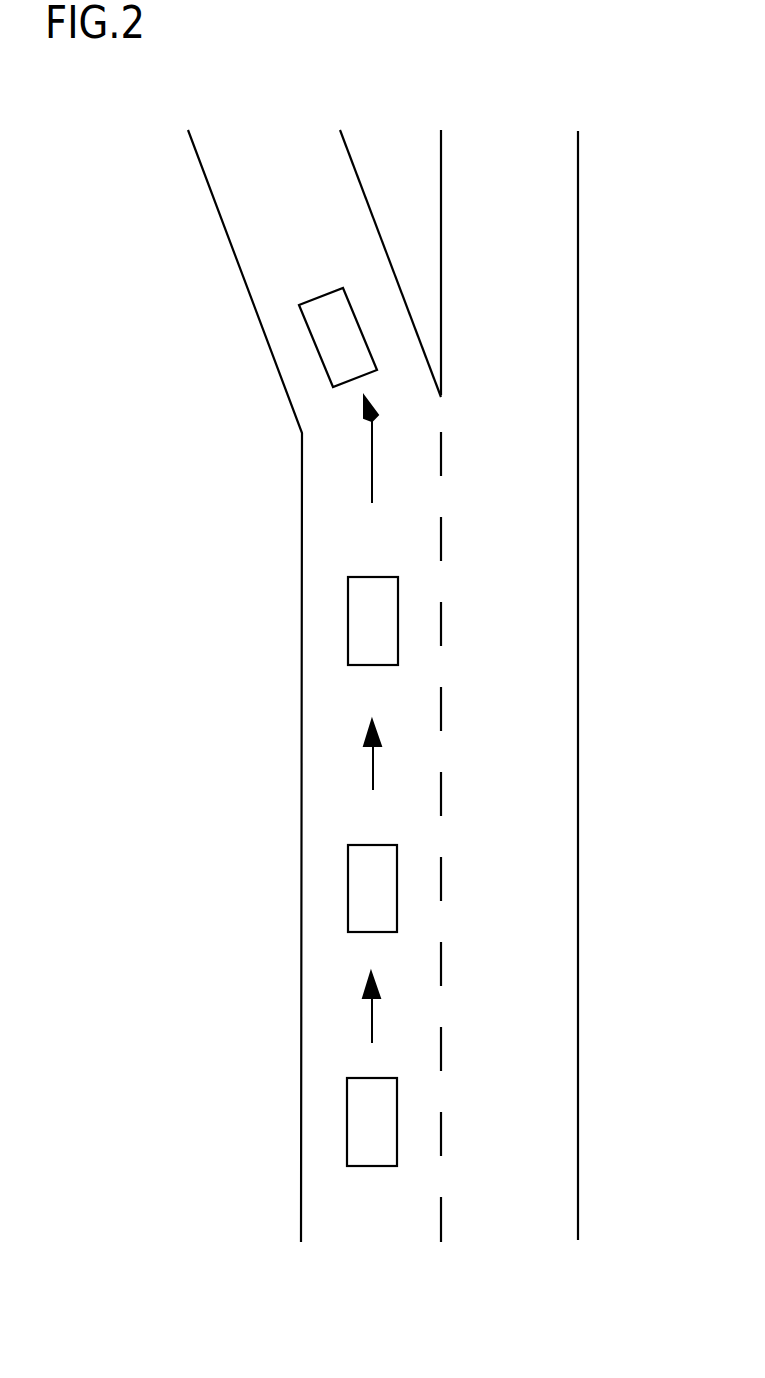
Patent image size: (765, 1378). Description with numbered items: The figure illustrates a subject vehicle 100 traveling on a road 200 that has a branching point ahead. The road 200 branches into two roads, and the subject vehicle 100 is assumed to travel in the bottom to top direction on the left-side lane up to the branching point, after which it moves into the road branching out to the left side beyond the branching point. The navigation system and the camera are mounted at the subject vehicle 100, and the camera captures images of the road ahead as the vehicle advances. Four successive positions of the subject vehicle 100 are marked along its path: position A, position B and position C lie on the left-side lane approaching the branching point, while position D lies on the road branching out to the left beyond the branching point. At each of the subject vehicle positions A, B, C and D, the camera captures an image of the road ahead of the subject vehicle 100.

The subject vehicle 100 is at (431, 1145).
The road 200 is at (280, 1208).
The subject vehicle position A is at (386, 1122).
The subject vehicle position B is at (386, 888).
The subject vehicle position C is at (387, 621).
The subject vehicle position D is at (344, 337).